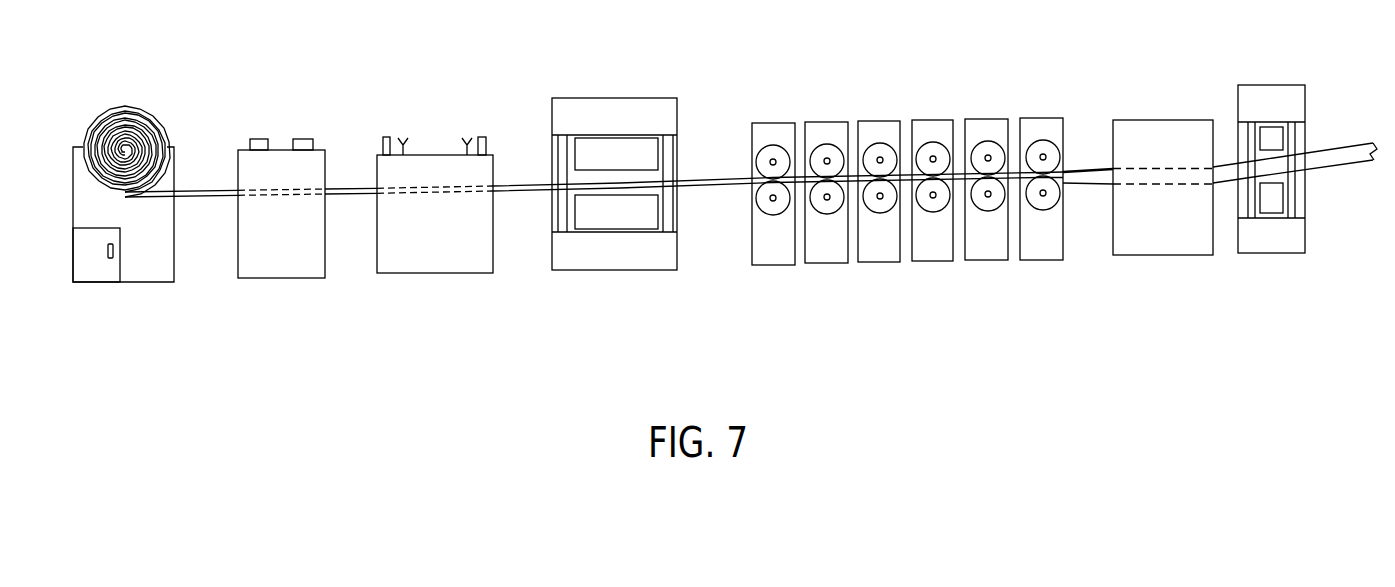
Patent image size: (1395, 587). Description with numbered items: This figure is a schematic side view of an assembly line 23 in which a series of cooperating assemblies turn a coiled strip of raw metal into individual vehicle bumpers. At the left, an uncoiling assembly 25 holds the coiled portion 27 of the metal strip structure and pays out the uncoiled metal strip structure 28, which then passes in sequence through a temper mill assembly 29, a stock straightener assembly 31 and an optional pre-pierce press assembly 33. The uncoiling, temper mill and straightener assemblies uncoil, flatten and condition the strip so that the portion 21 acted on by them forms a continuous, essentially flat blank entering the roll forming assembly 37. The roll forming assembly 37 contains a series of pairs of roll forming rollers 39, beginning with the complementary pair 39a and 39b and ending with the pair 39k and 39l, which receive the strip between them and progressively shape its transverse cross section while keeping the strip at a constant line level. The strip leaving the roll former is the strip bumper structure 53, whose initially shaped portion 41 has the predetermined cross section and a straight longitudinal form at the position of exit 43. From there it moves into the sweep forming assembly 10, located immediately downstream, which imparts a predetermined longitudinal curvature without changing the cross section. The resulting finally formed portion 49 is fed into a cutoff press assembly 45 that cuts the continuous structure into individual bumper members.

The sweep forming assembly 10 is at (1150, 245).
The portion of the metal strip structure 21 is at (718, 165).
The assembly line 23 is at (559, 341).
The uncoiling assembly 25 is at (148, 258).
The coiled portion of the metal strip structure 27 is at (133, 108).
The metal strip structure 28 is at (197, 188).
The temper mill assembly 29 is at (287, 260).
The stock straightener assembly 31 is at (445, 260).
The pre-pierce press assembly 33 is at (625, 252).
The roll forming assembly 37 is at (861, 303).
The roll forming rollers 39 is at (815, 133).
The upper roller of first complementary pair 39a is at (765, 170).
The lower roller of first complementary pair 39b is at (765, 203).
The upper roller of last complementary pair 39k is at (1045, 147).
The lower roller of last complementary pair 39l is at (1045, 203).
The initially shaped bumper structure 41 is at (1089, 146).
The position of exit 43 is at (1077, 207).
The cutoff press assembly 45 is at (1268, 248).
The finally formed portion 49 is at (1227, 143).
The strip bumper structure 53 is at (1341, 190).